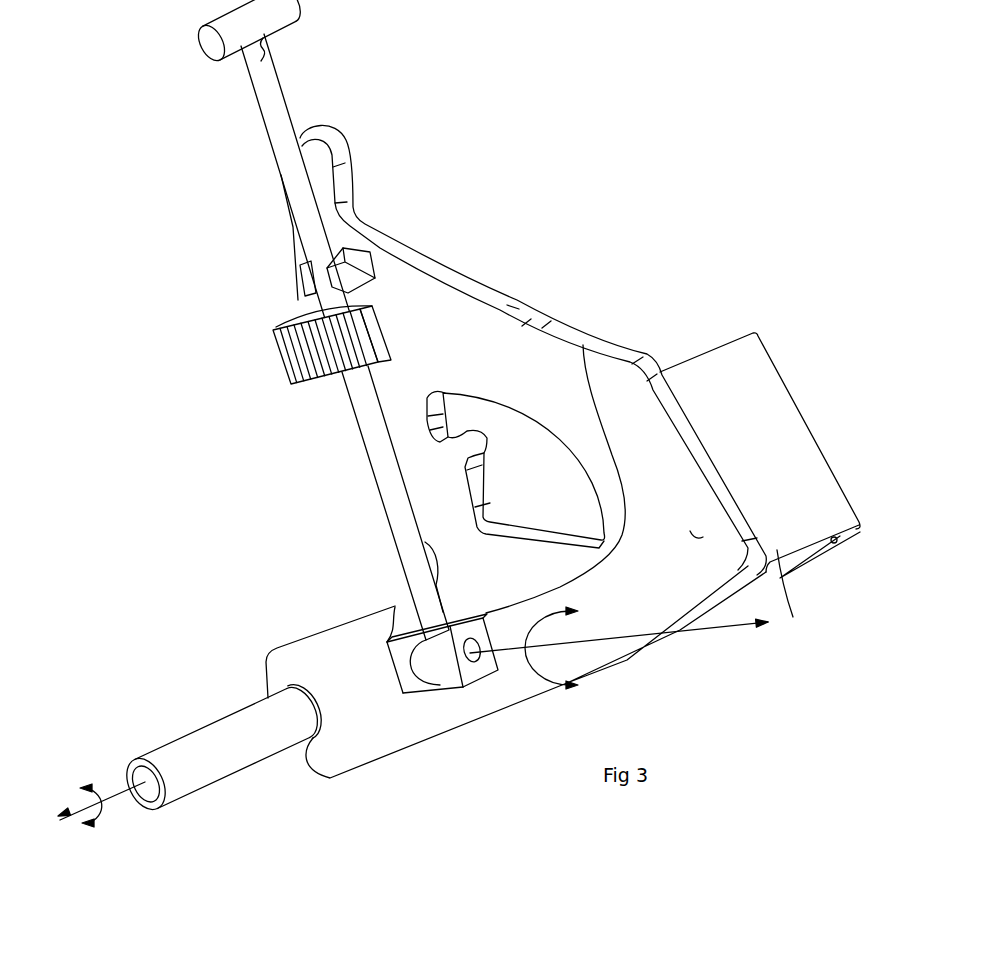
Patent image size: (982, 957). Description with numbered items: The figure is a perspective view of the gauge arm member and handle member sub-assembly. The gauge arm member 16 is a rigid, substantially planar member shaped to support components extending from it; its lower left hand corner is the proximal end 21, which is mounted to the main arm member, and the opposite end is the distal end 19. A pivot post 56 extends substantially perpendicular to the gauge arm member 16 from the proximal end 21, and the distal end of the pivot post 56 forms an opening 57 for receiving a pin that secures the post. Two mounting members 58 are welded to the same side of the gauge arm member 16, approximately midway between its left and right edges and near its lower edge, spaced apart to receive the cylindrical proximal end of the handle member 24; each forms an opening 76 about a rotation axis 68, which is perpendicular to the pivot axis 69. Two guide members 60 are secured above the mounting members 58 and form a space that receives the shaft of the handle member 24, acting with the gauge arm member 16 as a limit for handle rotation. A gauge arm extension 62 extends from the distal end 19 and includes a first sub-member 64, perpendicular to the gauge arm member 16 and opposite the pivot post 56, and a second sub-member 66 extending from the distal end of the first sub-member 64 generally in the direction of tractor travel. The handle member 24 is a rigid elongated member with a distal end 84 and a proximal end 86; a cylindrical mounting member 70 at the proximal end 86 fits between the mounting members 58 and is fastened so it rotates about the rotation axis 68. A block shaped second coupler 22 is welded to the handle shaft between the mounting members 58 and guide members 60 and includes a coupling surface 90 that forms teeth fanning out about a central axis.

The gauge arm member 16 is at (485, 324).
The distal end 19 is at (703, 537).
The proximal end 21 is at (305, 757).
The second coupler 22 is at (270, 347).
The handle member 24 is at (386, 504).
The pivot post 56 is at (222, 763).
The opening 57 is at (156, 751).
The mounting members 58 is at (458, 687).
The guide members 60 is at (447, 200).
The gauge arm extension 62 is at (703, 370).
The first sub-member 64 is at (633, 648).
The second sub-member 66 is at (803, 568).
The rotation axis 68 is at (683, 633).
The pivot axis 69 is at (70, 822).
The cylindrical mounting member 70 is at (390, 606).
The opening 76 is at (473, 661).
The distal end 84 is at (268, 67).
The proximal end 86 is at (583, 345).
The coupling surface 90 is at (273, 306).